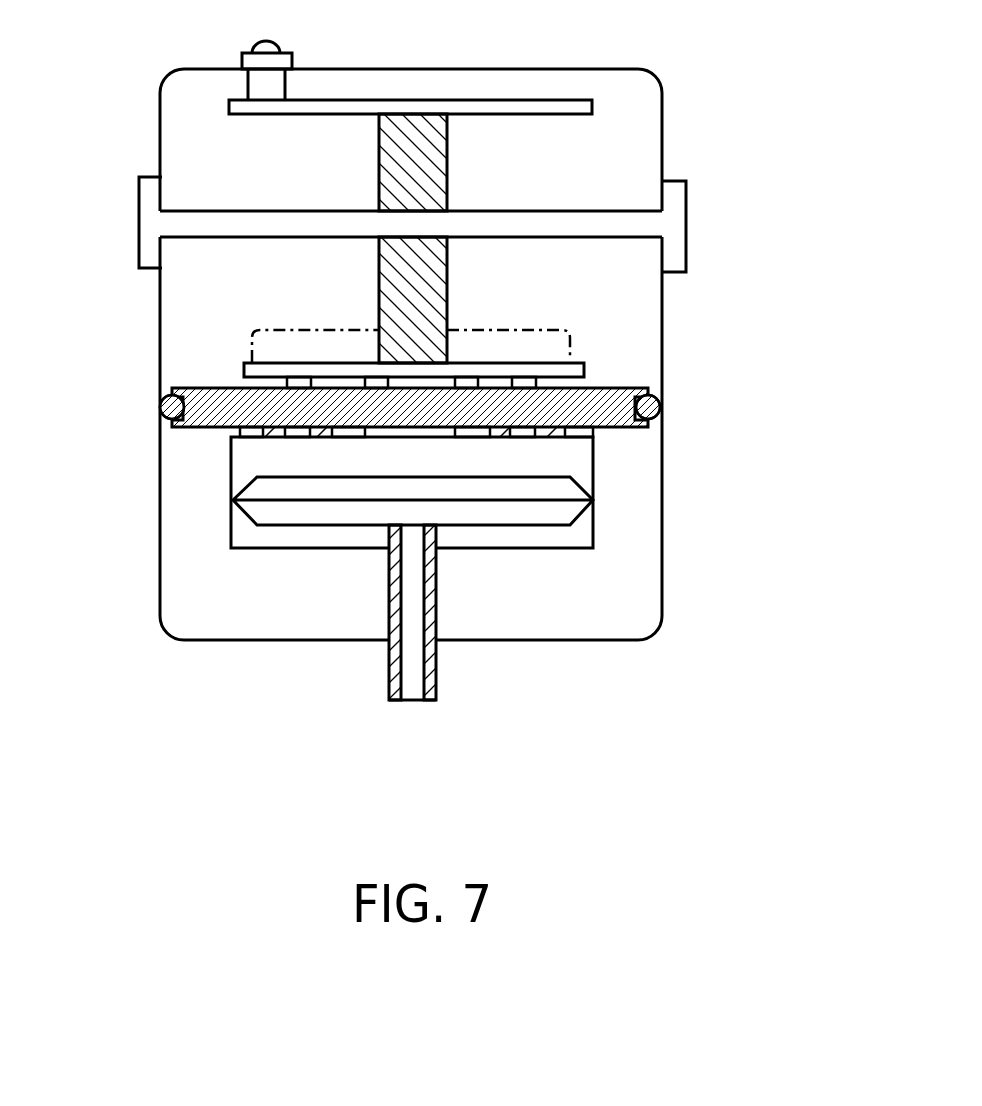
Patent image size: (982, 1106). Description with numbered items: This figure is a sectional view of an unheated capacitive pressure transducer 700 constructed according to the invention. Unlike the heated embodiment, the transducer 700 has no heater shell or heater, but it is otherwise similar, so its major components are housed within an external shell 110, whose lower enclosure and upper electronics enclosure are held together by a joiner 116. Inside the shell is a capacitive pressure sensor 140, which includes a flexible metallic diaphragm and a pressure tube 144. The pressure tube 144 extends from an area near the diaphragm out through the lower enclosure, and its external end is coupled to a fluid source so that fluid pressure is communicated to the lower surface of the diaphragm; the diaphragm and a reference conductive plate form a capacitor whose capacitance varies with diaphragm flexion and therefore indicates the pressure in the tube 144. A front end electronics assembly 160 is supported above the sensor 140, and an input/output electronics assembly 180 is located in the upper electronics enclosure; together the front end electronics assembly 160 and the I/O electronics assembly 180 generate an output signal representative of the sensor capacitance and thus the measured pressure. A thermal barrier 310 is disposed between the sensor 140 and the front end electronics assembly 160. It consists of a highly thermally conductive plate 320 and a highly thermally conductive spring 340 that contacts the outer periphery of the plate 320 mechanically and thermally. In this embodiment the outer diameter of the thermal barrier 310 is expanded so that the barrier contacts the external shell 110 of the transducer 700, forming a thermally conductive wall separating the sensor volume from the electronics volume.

The capacitive pressure transducer 700 is at (805, 124).
The external shell 110 is at (238, 643).
The joiner 116 is at (138, 202).
The input/output electronics assembly 180 is at (535, 100).
The front end electronics assembly 160 is at (584, 370).
The thermal barrier 310 is at (191, 385).
The highly thermally conductive plate 320 is at (191, 431).
The highly thermally conductive spring 340 is at (160, 405).
The capacitive pressure sensor 140 is at (595, 468).
The pressure tube 144 is at (436, 685).